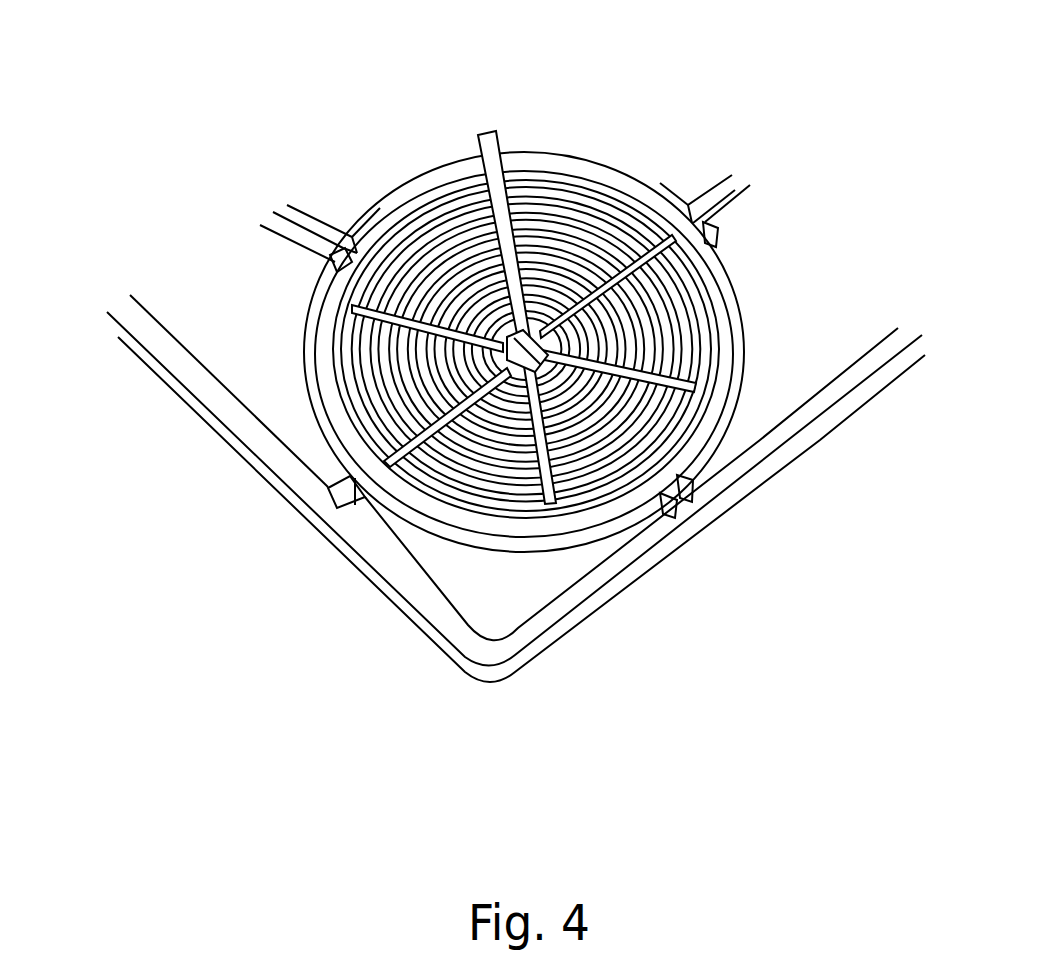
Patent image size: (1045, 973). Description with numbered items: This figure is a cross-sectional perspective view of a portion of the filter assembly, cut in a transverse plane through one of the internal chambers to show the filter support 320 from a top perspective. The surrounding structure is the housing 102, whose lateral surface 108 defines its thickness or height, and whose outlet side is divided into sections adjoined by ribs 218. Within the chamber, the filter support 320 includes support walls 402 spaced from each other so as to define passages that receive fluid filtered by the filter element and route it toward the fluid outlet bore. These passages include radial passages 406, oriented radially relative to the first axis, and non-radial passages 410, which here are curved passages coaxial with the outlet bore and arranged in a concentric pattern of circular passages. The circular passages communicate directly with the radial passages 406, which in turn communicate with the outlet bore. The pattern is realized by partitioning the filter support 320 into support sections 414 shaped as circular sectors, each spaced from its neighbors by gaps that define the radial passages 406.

The housing 102 is at (105, 365).
The lateral surface 108 is at (556, 648).
The rib 218 is at (358, 518).
The filter support 320 is at (447, 190).
The support wall 402 is at (597, 223).
The radial passage 406 is at (507, 192).
The non-radial passage 410 is at (672, 355).
The support section 414 is at (372, 207).